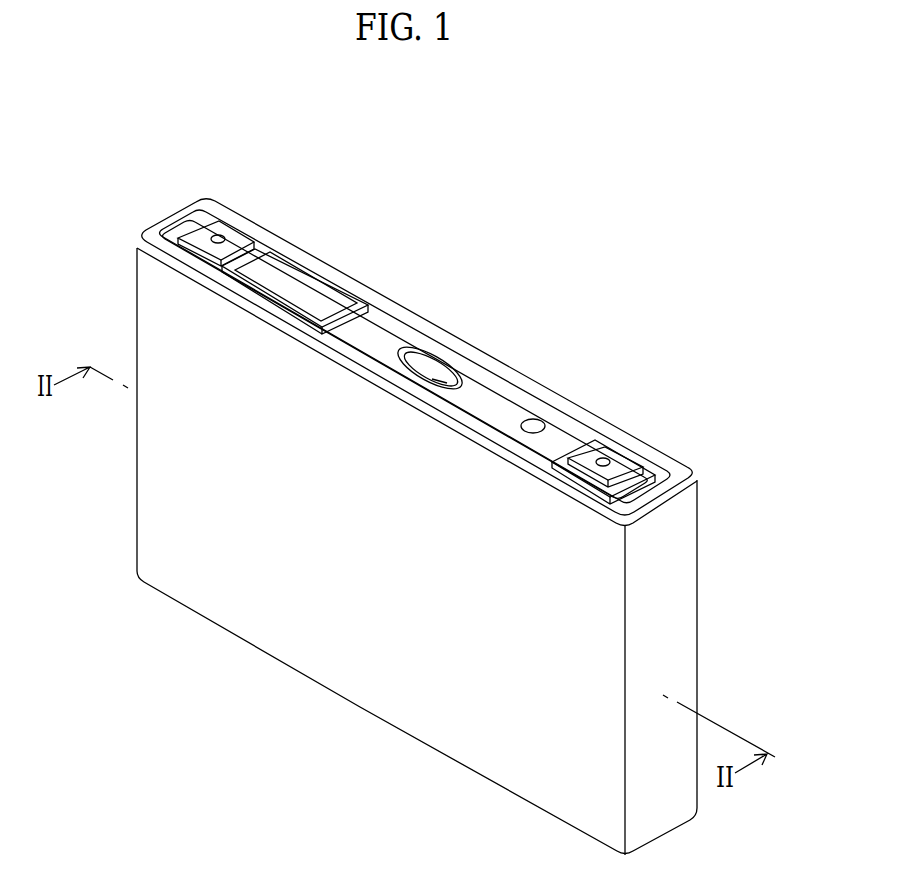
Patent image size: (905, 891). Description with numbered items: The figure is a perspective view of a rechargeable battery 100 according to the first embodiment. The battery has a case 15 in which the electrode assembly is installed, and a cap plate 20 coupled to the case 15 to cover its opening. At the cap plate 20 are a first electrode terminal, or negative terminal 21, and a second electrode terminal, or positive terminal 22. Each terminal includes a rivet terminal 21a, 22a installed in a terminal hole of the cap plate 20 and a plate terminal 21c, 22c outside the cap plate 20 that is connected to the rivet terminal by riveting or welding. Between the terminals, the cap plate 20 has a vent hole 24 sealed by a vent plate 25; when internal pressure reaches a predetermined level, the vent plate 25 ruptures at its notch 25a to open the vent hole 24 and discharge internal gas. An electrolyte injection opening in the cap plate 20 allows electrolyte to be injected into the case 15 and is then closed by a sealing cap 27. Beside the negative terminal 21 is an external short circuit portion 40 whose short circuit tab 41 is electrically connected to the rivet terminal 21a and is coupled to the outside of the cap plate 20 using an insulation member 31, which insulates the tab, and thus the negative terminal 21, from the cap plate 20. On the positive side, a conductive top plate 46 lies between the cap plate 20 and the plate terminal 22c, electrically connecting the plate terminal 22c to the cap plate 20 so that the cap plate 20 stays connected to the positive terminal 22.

The rechargeable battery 100 is at (538, 195).
The case 15 is at (348, 660).
The cap plate 20 is at (388, 330).
The insulation member 31 is at (282, 255).
The first electrode terminal 21 is at (219, 205).
The rivet terminal 21a is at (214, 235).
The plate terminal 21c is at (240, 238).
The second electrode terminal 22 is at (662, 449).
The rivet terminal 22a is at (607, 461).
The plate terminal 22c is at (615, 469).
The top plate 46 is at (623, 490).
The external short circuit portion 40 is at (312, 259).
The short circuit tab 41 is at (334, 306).
The vent hole 24 is at (473, 315).
The vent plate 25 is at (433, 370).
The notch 25a is at (442, 381).
The sealing cap 27 is at (536, 423).